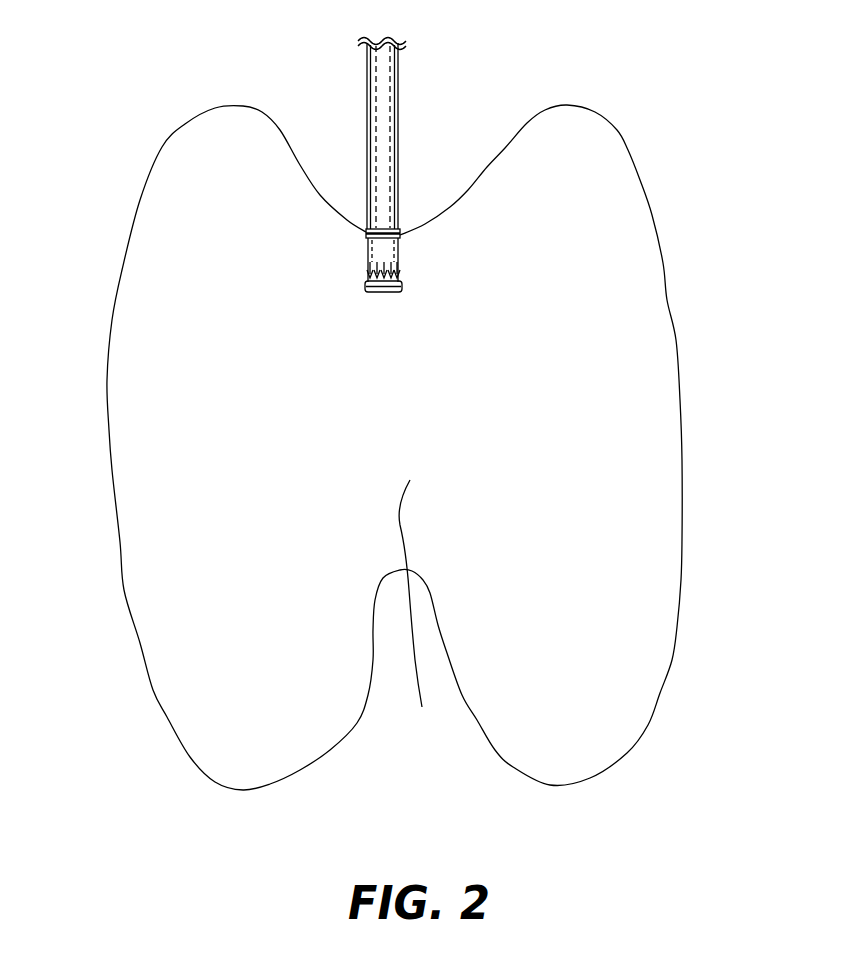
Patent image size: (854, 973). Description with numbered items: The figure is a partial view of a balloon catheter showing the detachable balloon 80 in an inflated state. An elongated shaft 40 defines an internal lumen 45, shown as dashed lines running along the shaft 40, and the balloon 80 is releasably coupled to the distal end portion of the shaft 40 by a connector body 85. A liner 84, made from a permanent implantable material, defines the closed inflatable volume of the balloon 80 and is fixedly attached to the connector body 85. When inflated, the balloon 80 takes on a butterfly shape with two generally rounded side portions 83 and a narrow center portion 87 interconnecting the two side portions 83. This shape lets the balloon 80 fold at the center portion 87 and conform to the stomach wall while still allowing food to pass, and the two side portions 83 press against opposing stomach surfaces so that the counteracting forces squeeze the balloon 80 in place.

The balloon 80 is at (720, 106).
The side portions 83 is at (142, 533).
The liner 84 is at (667, 281).
The center portion 87 is at (417, 610).
The elongated shaft 40 is at (390, 73).
The internal lumen 45 is at (378, 138).
The connector body 85 is at (385, 255).